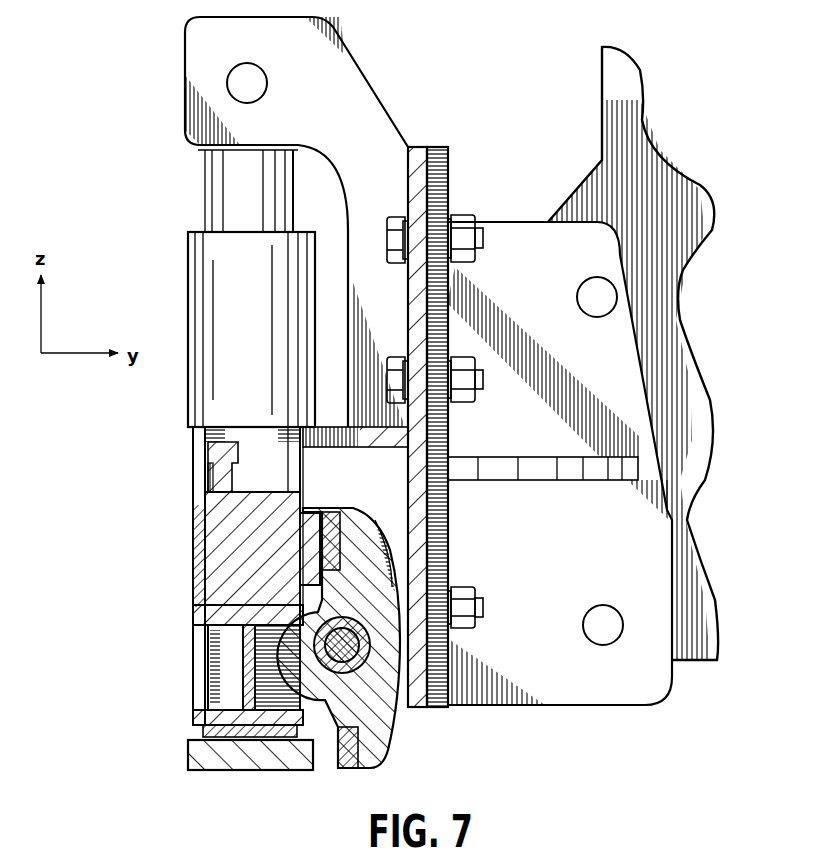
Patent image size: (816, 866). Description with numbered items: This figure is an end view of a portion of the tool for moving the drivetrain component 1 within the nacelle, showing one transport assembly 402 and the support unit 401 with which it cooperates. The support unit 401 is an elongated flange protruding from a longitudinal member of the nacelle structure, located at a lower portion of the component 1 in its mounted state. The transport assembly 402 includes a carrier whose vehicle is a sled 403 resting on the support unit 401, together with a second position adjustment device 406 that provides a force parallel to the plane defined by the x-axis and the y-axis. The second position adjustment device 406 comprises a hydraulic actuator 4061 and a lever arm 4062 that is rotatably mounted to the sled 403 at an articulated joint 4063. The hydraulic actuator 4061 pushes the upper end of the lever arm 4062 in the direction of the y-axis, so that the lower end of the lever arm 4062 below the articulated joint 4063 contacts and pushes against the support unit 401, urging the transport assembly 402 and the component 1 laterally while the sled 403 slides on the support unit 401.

The drivetrain component 1 is at (613, 82).
The transport assembly 402 is at (460, 96).
The second position adjustment device 406 is at (337, 600).
The hydraulic actuator 4061 is at (218, 527).
The lever arm 4062 is at (358, 542).
The articulated joint 4063 is at (355, 643).
The sled 403 is at (253, 667).
The support unit 401 is at (190, 755).